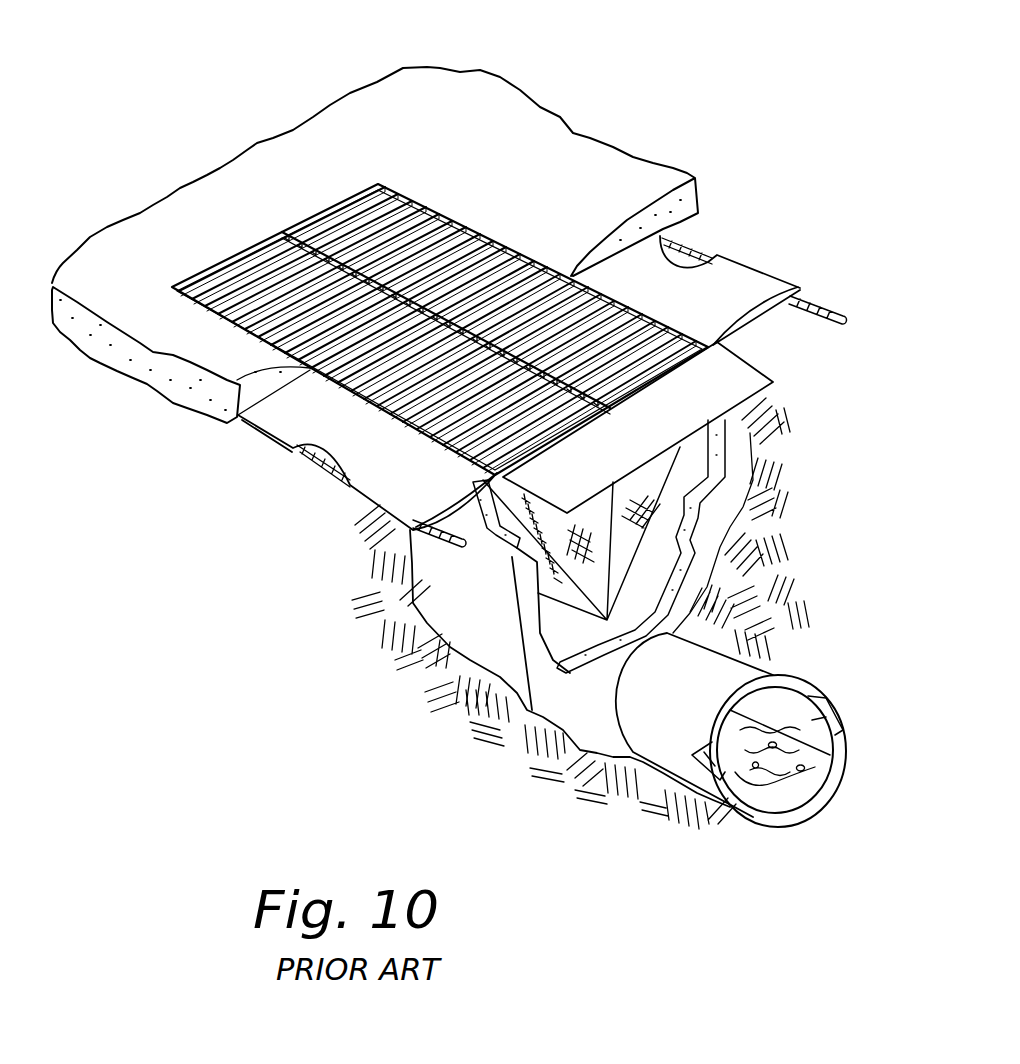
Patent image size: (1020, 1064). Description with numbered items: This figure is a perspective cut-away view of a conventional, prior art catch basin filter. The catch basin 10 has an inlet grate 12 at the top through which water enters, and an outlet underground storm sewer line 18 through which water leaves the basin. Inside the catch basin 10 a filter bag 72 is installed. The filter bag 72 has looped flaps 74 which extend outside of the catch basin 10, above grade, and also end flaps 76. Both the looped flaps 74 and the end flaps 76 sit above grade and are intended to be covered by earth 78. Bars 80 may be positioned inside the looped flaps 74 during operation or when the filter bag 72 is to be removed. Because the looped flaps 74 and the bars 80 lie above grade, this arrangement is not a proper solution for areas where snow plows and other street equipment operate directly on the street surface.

The earth 78 is at (490, 100).
The inlet grate 12 is at (468, 228).
The looped flaps 74 is at (763, 260).
The bars 80 is at (830, 303).
The end flaps 76 is at (730, 383).
The filter bag 72 is at (670, 476).
The catch basin 10 is at (487, 645).
The outlet underground storm sewer line 18 is at (743, 817).